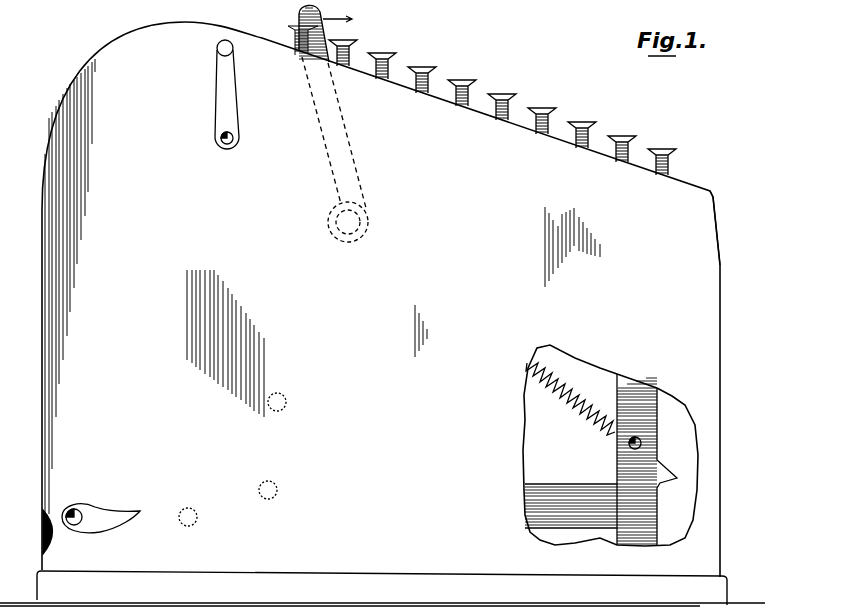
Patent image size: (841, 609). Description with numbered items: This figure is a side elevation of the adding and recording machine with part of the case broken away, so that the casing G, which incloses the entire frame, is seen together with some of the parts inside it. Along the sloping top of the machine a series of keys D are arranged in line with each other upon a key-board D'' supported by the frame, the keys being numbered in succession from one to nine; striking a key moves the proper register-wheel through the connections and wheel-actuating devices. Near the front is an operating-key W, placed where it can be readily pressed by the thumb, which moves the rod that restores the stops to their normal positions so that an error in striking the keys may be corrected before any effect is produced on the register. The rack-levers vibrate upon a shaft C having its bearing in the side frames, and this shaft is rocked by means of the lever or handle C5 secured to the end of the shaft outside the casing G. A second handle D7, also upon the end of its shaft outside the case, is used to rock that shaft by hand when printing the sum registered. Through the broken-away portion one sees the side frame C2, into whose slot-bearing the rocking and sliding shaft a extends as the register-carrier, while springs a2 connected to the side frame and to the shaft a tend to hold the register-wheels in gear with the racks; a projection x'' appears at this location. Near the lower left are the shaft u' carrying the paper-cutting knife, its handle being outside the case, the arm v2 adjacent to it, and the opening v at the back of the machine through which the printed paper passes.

The casing G is at (382, 314).
The handle D7 is at (236, 110).
The lever or handle C5 is at (305, 20).
The shaft C is at (360, 222).
The keys D is at (482, 101).
The operating-key W is at (669, 162).
The key-board D'' is at (707, 214).
The side frame C2 is at (610, 445).
The springs a2 is at (570, 399).
The rocking and sliding shaft a is at (628, 447).
The notch / projection x'' is at (661, 434).
The cam arm v2 is at (95, 511).
The shaft u' is at (75, 501).
The opening v is at (42, 527).